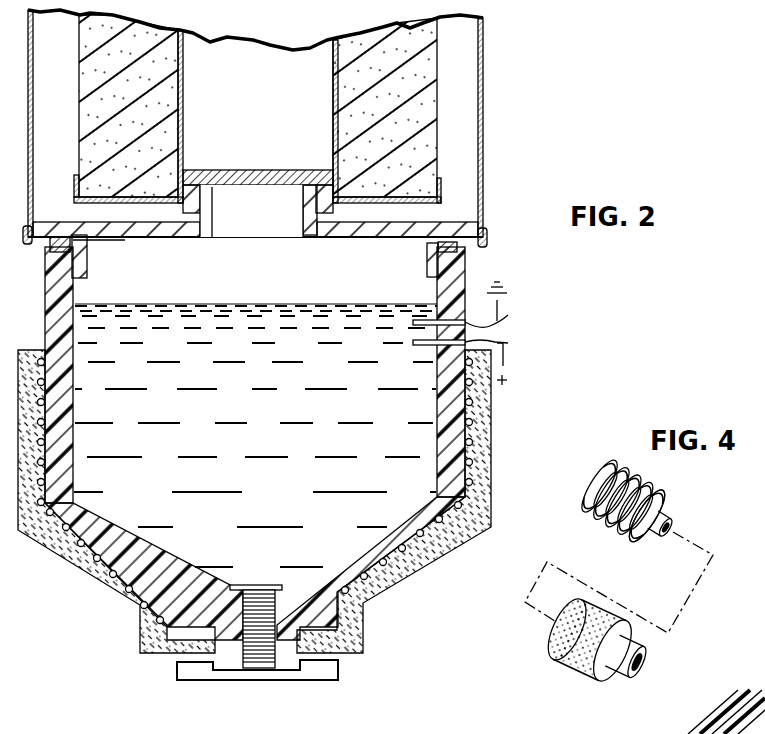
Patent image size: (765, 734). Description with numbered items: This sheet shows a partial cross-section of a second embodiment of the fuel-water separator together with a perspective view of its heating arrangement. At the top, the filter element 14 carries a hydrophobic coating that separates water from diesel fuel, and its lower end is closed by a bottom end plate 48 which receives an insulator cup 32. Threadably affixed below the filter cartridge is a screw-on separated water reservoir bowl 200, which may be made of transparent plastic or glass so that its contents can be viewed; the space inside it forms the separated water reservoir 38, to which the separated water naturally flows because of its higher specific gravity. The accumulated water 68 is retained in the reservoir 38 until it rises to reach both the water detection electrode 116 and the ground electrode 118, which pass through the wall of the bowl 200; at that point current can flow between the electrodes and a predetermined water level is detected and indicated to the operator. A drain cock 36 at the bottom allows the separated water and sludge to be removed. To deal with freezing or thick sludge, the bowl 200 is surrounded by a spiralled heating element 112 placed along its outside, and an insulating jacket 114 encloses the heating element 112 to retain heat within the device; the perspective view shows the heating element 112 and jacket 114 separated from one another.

In FIG. 2, the filter element 14 is at (76, 85).
In FIG. 2, the insulator cup 32 is at (250, 187).
In FIG. 2, the bottom end plate 48 is at (430, 201).
In FIG. 2, the separated water reservoir bowl 200 is at (468, 272).
In FIG. 4, the separated water reservoir bowl 200 is at (612, 468).
In FIG. 2, the water 68 is at (251, 320).
In FIG. 2, the ground electrode 118 is at (479, 307).
In FIG. 2, the water detection electrode 116 is at (479, 358).
In FIG. 2, the spiralled heating element 112 is at (470, 444).
In FIG. 4, the spiralled heating element 112 is at (643, 481).
In FIG. 2, the insulating jacket 114 is at (493, 490).
In FIG. 4, the insulating jacket 114 is at (572, 675).
In FIG. 2, the separated water reservoir 38 is at (275, 488).
In FIG. 2, the drain cock 36 is at (196, 681).